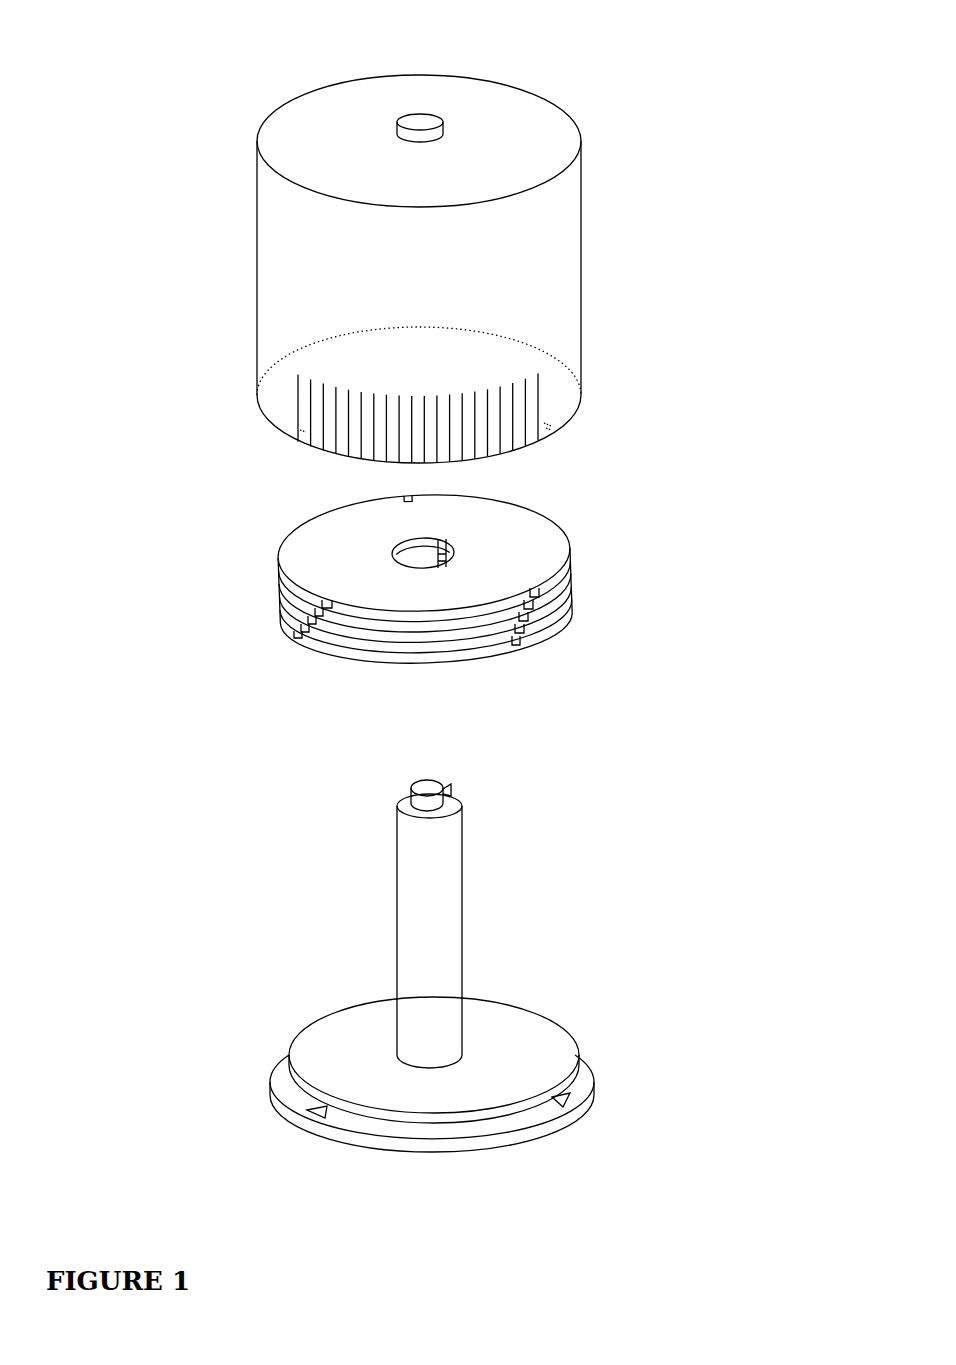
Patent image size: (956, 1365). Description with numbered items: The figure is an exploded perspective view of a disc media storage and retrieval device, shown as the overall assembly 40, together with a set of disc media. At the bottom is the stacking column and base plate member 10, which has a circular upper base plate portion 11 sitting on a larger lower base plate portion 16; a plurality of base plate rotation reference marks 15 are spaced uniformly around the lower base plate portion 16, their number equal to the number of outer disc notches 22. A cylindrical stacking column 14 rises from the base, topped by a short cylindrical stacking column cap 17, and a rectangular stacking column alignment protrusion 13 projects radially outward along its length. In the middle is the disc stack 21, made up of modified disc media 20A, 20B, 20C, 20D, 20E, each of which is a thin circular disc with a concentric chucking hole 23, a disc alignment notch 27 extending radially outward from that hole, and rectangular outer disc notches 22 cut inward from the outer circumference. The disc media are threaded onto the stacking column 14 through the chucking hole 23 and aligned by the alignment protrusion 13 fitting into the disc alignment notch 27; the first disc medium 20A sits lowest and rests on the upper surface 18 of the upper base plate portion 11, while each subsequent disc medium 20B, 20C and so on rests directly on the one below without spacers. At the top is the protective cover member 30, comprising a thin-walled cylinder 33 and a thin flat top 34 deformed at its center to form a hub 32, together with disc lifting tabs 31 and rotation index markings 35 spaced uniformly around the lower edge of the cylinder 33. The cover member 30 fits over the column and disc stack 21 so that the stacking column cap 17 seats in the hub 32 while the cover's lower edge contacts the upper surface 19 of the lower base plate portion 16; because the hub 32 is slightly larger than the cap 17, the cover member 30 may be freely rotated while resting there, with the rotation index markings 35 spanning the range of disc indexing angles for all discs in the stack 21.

The stacking column and base plate member 10 is at (433, 998).
The upper base plate portion 11 is at (433, 1071).
The stacking column alignment protrusion 13 is at (468, 792).
The stacking column 14 is at (397, 898).
The base plate rotation reference marks 15 is at (565, 1113).
The lower base plate portion 16 is at (355, 1142).
The stacking column cap 17 is at (410, 801).
The upper surface of the upper base plate portion 18 is at (507, 1035).
The upper surface of the lower base plate portion 19 is at (585, 1065).
The modified disc medium 20A is at (498, 656).
The modified disc medium 20B is at (440, 655).
The modified disc medium 20C is at (392, 648).
The modified disc medium 20D is at (343, 628).
The modified disc medium 20E is at (290, 598).
The disc stack 21 is at (407, 605).
The outer disc notch 22 is at (550, 602).
The chucking hole 23 is at (393, 548).
The disc alignment notch 27 is at (460, 533).
The protective cover member 30 is at (432, 231).
The disc lifting tab 31 is at (558, 425).
The cover member hub 32 is at (431, 117).
The thin-walled cylinder 33 is at (583, 277).
The thin flat top 34 is at (533, 136).
The rotation index markings 35 is at (294, 398).
The pill dispenser assembly 40 is at (668, 110).